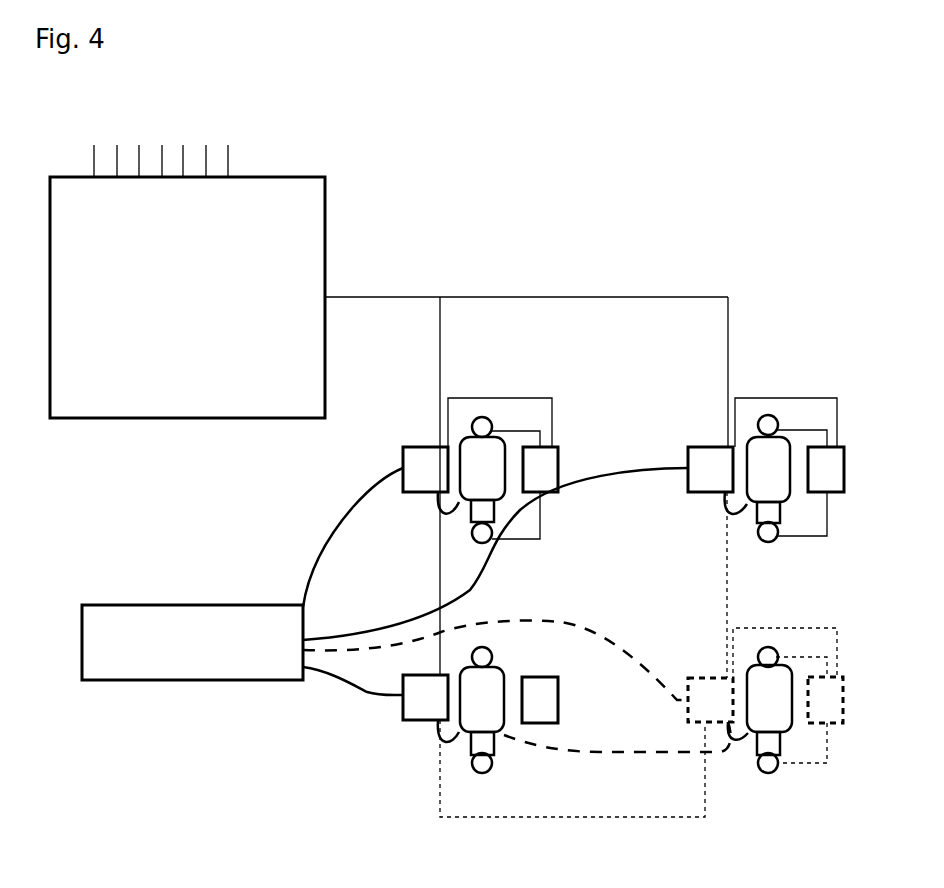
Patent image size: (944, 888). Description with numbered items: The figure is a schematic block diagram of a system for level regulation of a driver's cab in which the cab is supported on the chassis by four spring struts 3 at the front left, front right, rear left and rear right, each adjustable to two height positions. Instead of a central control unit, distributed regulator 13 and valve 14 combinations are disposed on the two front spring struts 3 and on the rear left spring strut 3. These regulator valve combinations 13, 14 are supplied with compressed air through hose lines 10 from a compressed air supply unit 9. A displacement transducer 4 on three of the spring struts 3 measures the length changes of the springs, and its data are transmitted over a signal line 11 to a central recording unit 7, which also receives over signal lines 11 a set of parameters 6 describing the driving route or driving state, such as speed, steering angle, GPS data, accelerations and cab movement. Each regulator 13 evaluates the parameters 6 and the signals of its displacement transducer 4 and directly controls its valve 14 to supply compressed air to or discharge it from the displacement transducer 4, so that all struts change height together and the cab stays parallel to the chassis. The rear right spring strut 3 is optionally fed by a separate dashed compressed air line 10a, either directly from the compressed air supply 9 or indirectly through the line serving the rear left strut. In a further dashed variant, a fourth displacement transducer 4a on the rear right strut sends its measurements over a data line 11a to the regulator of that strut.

The spring strut 3 is at (487, 418).
The displacement transducer 4 is at (540, 446).
The fourth displacement transducer 4a is at (835, 728).
The parameters 6 is at (230, 195).
The central recording unit 7 is at (318, 177).
The compressed air supply unit 9 is at (124, 606).
The hose line 10 is at (332, 517).
The separate compressed air line 10a is at (604, 643).
The signal line 11 is at (93, 156).
The data line 11a is at (805, 628).
The regulator 13 is at (404, 452).
The valve 14 is at (435, 468).